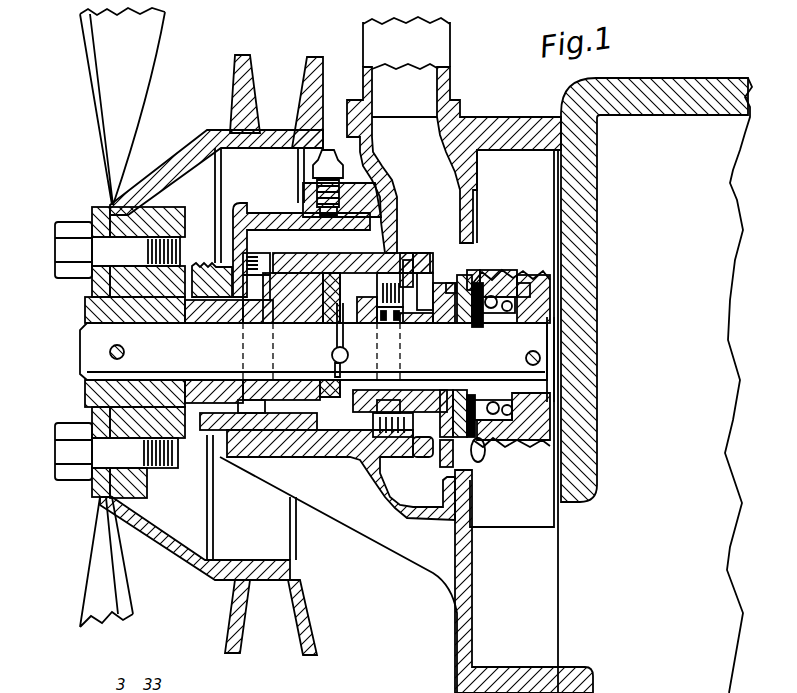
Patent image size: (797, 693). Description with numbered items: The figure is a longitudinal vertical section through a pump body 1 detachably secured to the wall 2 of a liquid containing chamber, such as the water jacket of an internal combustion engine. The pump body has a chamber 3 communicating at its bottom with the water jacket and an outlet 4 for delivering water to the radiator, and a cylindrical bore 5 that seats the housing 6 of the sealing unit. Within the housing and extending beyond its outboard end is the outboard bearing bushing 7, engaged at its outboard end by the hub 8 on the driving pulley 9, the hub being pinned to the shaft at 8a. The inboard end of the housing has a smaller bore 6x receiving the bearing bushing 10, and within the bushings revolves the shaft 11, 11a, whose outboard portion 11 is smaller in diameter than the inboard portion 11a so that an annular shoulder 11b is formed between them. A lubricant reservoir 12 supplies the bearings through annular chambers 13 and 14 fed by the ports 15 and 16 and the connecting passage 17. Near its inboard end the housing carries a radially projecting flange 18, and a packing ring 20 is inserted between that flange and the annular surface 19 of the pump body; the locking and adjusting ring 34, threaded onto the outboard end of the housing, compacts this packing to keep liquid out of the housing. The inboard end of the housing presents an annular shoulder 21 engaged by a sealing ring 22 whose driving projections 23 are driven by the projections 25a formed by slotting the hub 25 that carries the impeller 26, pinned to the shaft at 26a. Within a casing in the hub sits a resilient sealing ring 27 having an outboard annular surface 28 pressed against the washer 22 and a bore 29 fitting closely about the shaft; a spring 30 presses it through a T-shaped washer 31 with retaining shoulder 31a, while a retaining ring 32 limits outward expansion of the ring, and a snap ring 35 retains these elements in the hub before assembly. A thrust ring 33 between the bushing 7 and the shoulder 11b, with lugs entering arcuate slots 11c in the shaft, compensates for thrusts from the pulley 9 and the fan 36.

The pump body 1 is at (363, 480).
The wall 2 is at (671, 78).
The chamber 3 is at (524, 581).
The outlet 4 is at (406, 67).
The cylindrical bore 5 is at (305, 432).
The housing 6 is at (308, 424).
The bore 6x is at (427, 447).
The outboard bearing bushing 7 is at (220, 325).
The hub 8 is at (85, 309).
The pin 8a is at (110, 352).
The driving pulley 9 is at (271, 128).
The bearing bushing 10 is at (430, 323).
The shaft 11 is at (313, 351).
The inboard shaft portion 11a is at (548, 372).
The annular shoulder 11b is at (347, 351).
The arcuate slots 11c is at (332, 356).
The lubricant reservoir 12 is at (262, 235).
The annular chamber 13 is at (255, 414).
The annular chamber 14 is at (387, 438).
The port 15 is at (253, 262).
The port 16 is at (390, 270).
The connecting passage 17 is at (300, 257).
The flange 18 is at (431, 283).
The annular surface 19 is at (409, 262).
The packing ring 20 is at (433, 268).
The annular shoulder 21 is at (447, 325).
The sealing ring 22 is at (462, 325).
The driving projections 23 is at (462, 442).
The hub 25 is at (485, 458).
The projections 25a is at (478, 283).
The impeller 26 is at (533, 198).
The pin 26a is at (541, 357).
The sealing ring 27 is at (480, 330).
The outboard annular surface 28 is at (477, 298).
The bore 29 is at (507, 325).
The spring 30 is at (517, 311).
The washer 31 is at (470, 417).
The retaining shoulder 31a is at (522, 285).
The retaining ring 32 is at (495, 290).
The thrust ring 33 is at (330, 327).
The locking and adjusting ring 34 is at (205, 264).
The snap ring 35 is at (452, 283).
The fan 36 is at (122, 317).